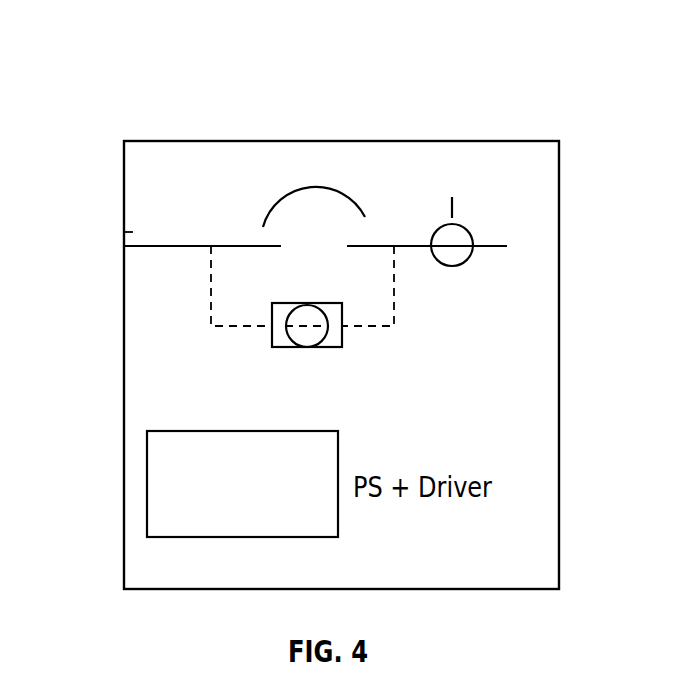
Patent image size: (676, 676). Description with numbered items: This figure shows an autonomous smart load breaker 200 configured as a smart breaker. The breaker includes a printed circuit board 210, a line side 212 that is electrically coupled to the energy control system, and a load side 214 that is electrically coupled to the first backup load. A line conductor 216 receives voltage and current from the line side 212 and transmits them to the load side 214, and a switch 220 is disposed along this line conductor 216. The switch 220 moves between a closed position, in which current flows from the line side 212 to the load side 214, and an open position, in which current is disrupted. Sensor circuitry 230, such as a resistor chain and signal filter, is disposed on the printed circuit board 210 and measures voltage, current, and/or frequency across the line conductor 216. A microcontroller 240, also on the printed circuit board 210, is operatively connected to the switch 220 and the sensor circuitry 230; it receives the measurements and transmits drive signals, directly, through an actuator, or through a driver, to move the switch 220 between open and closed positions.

The autonomous smart load breaker 200 is at (108, 38).
The printed circuit board 210 is at (521, 157).
The line side 212 is at (131, 232).
The load side 214 is at (482, 246).
The line conductor 216 is at (192, 246).
The switch 220 is at (332, 183).
The sensor circuitry 230 is at (342, 338).
The microcontroller 240 is at (147, 484).